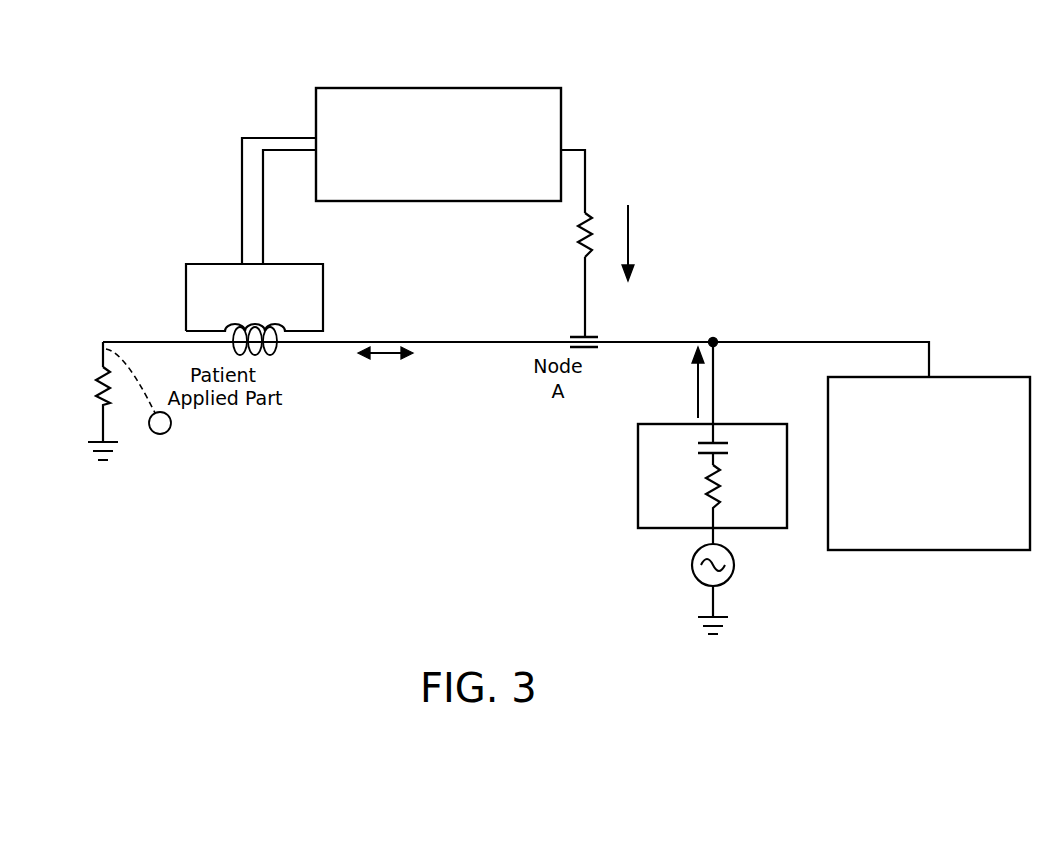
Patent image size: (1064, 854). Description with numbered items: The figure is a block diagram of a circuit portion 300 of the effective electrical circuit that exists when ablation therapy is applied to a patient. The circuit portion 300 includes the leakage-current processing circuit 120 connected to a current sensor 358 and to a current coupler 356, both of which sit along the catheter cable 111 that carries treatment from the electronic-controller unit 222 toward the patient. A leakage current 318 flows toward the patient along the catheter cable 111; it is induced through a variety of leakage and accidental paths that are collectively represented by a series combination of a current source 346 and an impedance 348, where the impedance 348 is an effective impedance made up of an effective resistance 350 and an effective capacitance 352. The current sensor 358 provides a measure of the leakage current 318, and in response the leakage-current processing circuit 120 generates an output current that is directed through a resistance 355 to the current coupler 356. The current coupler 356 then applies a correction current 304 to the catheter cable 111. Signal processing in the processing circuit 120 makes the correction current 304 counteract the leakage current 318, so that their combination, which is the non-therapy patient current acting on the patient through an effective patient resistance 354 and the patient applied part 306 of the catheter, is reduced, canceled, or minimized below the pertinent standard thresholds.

The leakage-current processing circuit 120 is at (437, 88).
The current sensor 358 is at (251, 325).
The effective patient resistance 354 is at (81, 413).
The patient applied part 306 is at (165, 434).
The catheter cable 111 is at (388, 340).
The resistance 355 is at (560, 235).
The current coupler 356 is at (563, 328).
The correction current 304 is at (686, 246).
The circuit portion 300 is at (872, 242).
The leakage current 318 is at (655, 383).
The impedance 348 is at (638, 478).
The effective capacitance 352 is at (737, 454).
The effective resistance 350 is at (741, 504).
The current source 346 is at (692, 563).
The electronic-controller unit 222 is at (930, 552).